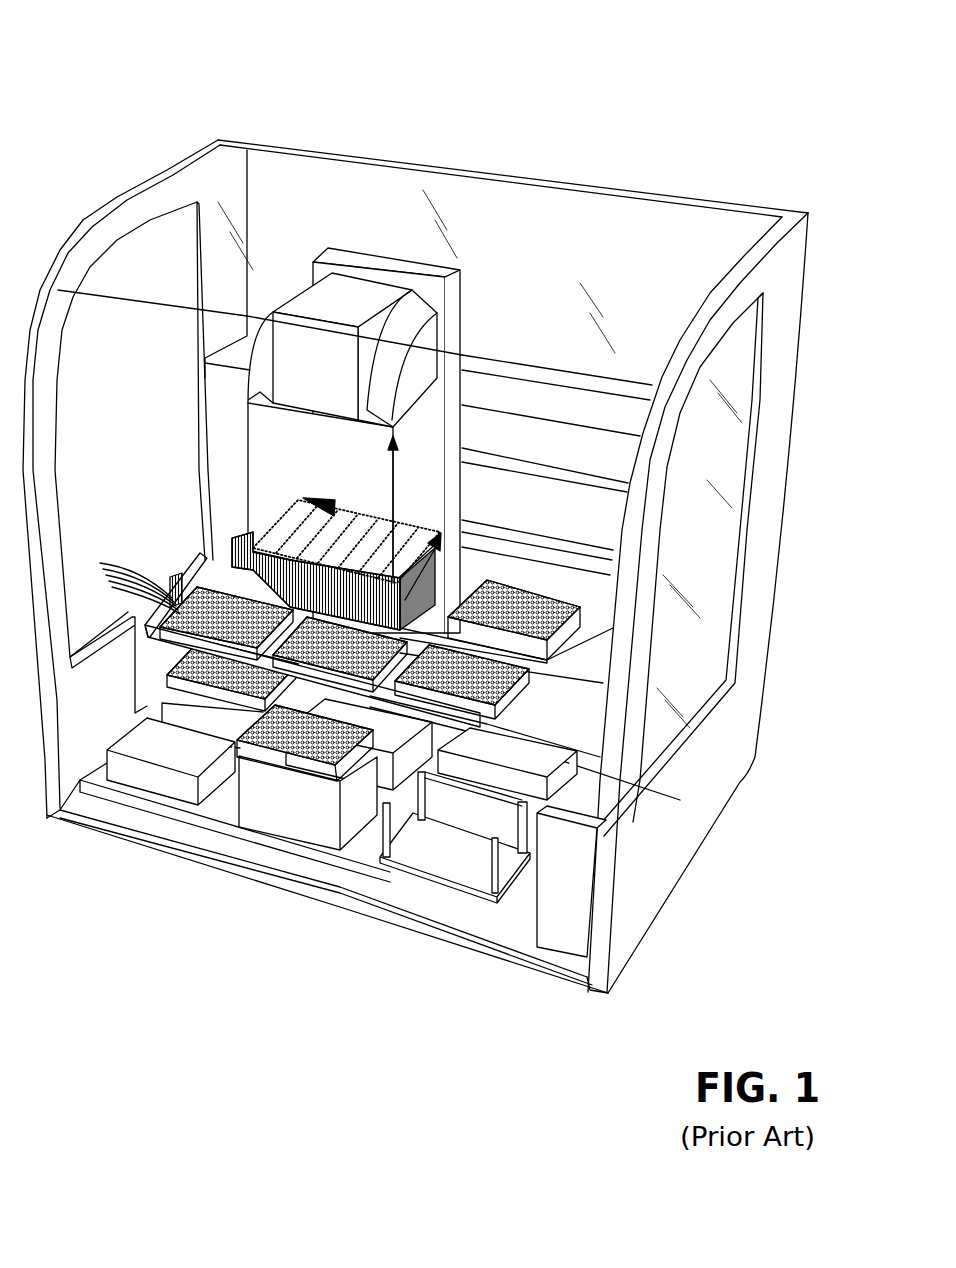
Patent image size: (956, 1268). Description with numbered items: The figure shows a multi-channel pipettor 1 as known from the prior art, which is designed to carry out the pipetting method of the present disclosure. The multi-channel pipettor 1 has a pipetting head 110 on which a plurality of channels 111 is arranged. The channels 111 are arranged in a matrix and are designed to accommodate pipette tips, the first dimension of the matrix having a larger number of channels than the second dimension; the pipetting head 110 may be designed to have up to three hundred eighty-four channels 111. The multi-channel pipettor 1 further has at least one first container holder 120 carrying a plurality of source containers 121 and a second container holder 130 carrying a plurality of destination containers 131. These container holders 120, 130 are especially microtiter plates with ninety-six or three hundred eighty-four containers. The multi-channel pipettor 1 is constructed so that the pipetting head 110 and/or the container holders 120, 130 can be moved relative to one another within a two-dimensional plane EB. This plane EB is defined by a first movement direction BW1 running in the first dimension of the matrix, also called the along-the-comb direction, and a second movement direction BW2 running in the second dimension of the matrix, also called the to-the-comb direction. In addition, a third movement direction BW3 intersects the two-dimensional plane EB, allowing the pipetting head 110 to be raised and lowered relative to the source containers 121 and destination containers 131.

The multi-channel pipettor 1 is at (149, 131).
The pipetting head 110 is at (267, 465).
The channels 111 is at (580, 603).
The first container holder 120 is at (345, 672).
The source containers 121 is at (490, 703).
The second container holder 130 is at (131, 672).
The destination containers 131 is at (132, 574).
The first movement direction BW1 is at (232, 553).
The second movement direction BW2 is at (420, 572).
The third movement direction BW3 is at (393, 478).
The two-dimensional plane EB is at (292, 505).